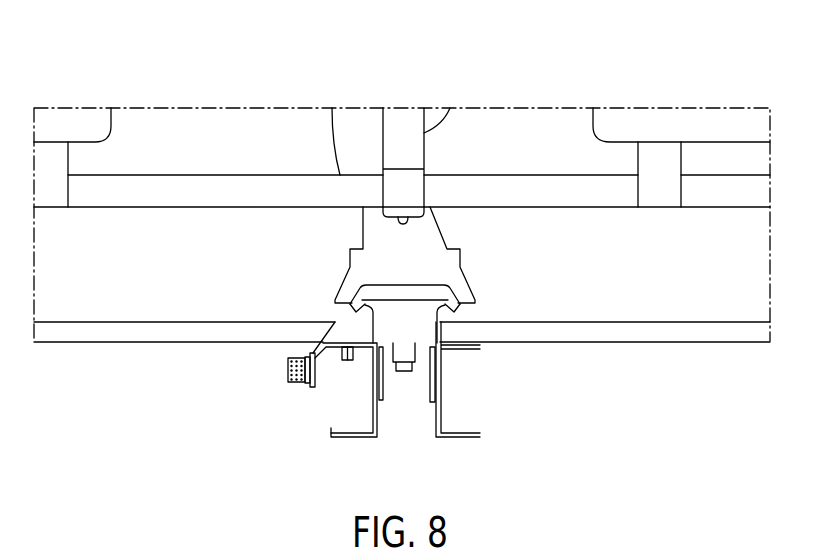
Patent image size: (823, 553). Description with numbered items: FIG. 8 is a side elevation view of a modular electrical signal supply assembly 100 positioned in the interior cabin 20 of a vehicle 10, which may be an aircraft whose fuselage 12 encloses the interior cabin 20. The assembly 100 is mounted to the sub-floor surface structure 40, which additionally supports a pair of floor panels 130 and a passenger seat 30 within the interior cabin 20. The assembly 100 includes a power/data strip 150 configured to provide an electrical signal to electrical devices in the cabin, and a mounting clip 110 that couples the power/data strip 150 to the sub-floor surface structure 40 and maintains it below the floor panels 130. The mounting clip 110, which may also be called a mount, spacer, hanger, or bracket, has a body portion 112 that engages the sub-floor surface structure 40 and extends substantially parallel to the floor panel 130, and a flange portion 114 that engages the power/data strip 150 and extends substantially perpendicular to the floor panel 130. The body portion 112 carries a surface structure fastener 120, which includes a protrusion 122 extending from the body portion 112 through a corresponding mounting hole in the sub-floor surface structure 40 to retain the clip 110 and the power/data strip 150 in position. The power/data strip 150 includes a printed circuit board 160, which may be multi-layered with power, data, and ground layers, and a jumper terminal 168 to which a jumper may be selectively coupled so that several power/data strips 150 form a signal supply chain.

The vehicle 10 is at (183, 29).
The fuselage 12 is at (189, 56).
The interior cabin 20 is at (196, 86).
The passenger seat 30 is at (218, 207).
The sub-floor surface structure 40 is at (443, 413).
The modular electrical signal supply assembly 100 is at (364, 275).
The mounting clip 110 is at (341, 390).
The body portion 112 is at (337, 322).
The flange portion 114 is at (357, 354).
The surface structure fastener 120 is at (381, 400).
The protrusion 122 is at (384, 402).
The floor panel 130 is at (155, 322).
The power/data strip 150 is at (301, 388).
The printed circuit board 160 is at (308, 392).
The jumper terminal 168 is at (290, 360).